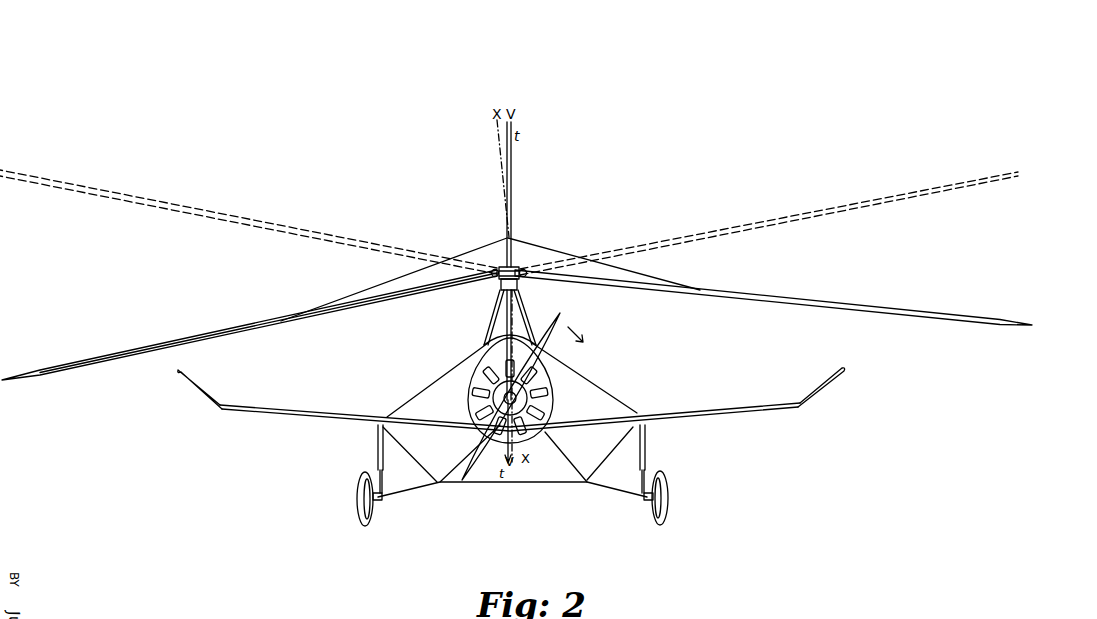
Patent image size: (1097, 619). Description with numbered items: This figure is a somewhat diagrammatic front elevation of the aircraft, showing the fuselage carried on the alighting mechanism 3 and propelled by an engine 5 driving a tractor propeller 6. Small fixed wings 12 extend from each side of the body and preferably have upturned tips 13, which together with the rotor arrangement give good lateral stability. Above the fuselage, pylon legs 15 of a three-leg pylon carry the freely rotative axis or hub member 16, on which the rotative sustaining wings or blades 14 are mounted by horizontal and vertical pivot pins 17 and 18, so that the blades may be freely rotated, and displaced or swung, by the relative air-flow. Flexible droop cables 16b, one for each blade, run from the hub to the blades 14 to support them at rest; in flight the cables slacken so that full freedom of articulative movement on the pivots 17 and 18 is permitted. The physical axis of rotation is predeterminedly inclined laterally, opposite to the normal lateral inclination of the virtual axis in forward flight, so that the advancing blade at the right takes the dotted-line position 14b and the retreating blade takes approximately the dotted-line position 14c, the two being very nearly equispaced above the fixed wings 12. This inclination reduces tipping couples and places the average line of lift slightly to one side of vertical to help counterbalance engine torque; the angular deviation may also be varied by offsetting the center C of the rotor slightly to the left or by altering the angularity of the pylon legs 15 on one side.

The alighting mechanism 3 is at (512, 475).
The engine 5 is at (552, 378).
The tractor propeller 6 is at (478, 461).
The small fixed wing 12 is at (294, 412).
The upturned tip 13 is at (205, 389).
The rotative sustaining wing or blade 14 is at (228, 330).
The advancing blade position 14b is at (728, 229).
The retreating blade position 14c is at (290, 229).
The pylon leg 15 is at (523, 311).
The rotor hub 16 is at (518, 268).
The droop cable 16b is at (694, 258).
The horizontal pivot pin 17 is at (502, 269).
The vertical pivot pin 18 is at (496, 270).
The center of the rotor C is at (525, 272).